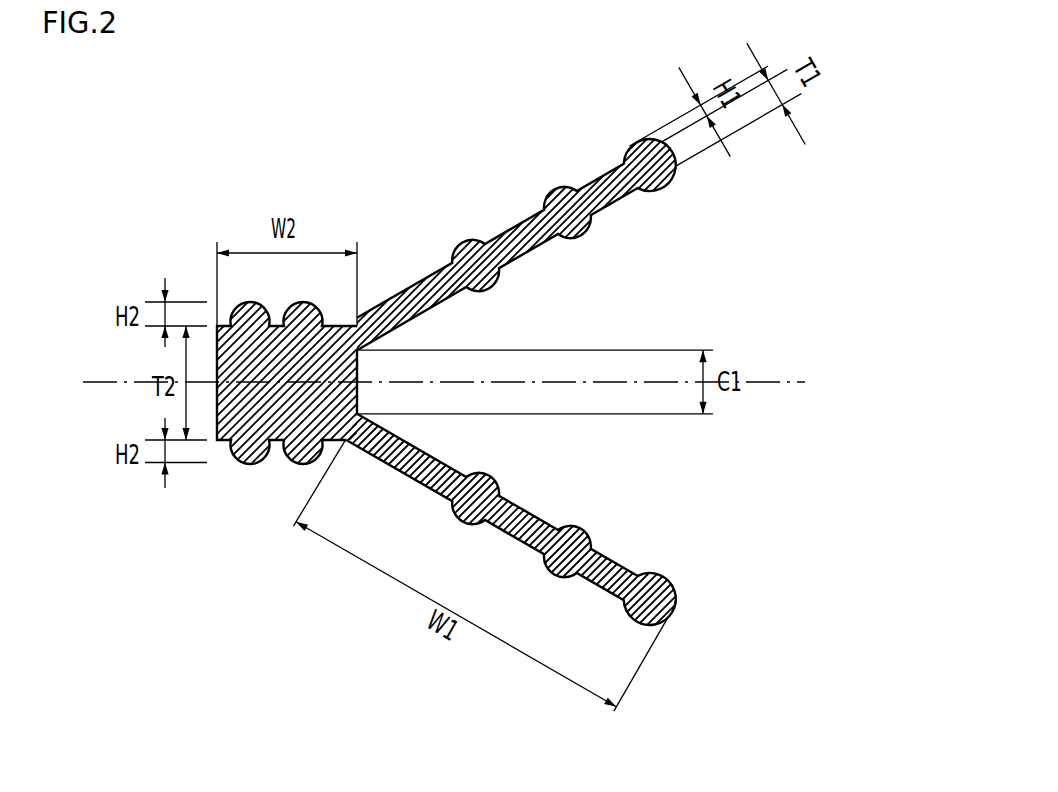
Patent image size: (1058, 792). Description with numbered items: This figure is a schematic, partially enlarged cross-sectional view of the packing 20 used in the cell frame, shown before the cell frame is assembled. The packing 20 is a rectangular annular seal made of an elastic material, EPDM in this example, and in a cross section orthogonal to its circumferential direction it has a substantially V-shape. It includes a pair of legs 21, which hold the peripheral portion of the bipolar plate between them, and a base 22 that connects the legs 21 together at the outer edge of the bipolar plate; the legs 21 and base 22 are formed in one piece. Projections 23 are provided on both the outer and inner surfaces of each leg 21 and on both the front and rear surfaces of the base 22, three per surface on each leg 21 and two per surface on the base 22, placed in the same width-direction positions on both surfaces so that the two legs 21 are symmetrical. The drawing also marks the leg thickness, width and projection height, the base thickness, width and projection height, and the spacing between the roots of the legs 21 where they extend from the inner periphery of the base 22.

The packing 20 is at (419, 345).
The leg 21 is at (608, 206).
The base 22 is at (216, 439).
The projection 23 is at (295, 458).